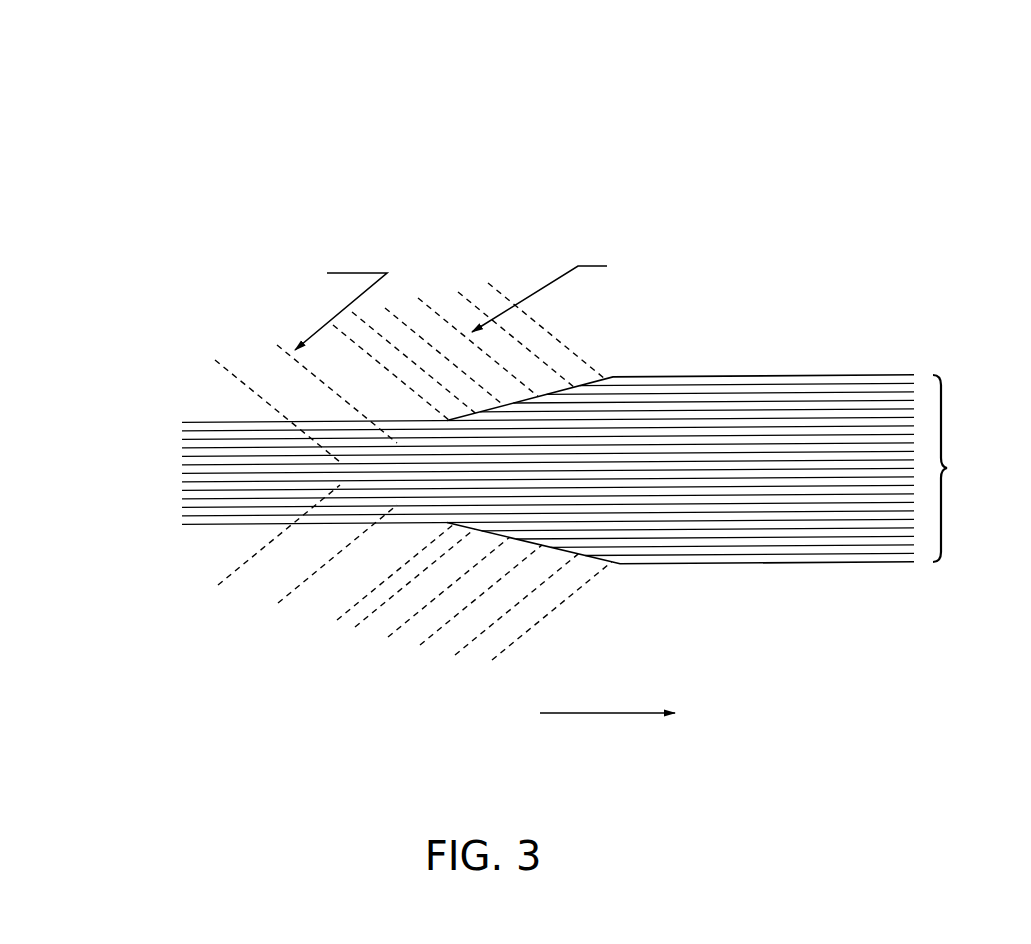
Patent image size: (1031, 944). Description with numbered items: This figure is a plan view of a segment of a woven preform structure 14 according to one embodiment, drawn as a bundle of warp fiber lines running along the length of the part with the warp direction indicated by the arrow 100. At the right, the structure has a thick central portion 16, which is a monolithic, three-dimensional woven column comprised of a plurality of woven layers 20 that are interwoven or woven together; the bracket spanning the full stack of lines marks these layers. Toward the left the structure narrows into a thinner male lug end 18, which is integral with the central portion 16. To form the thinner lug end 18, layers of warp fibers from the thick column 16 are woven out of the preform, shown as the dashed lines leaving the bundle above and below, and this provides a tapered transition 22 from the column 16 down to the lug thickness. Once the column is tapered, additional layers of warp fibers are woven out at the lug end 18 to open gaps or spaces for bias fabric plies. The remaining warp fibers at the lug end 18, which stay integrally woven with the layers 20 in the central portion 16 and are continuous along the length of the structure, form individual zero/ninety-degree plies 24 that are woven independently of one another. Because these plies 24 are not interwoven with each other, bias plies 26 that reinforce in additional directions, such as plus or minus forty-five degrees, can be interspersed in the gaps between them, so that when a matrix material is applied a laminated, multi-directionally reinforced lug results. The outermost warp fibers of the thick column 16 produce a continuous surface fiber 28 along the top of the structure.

The structure 14 is at (483, 235).
The thick central portion 16 is at (826, 488).
The thinner male lug ends 18 is at (240, 483).
The woven layers 20 is at (963, 468).
The tapered transition 22 is at (518, 545).
The plies 24 is at (486, 511).
The bias plies 26 is at (491, 419).
The continuous surface fiber 28 is at (680, 368).
The arrow 100 is at (565, 699).